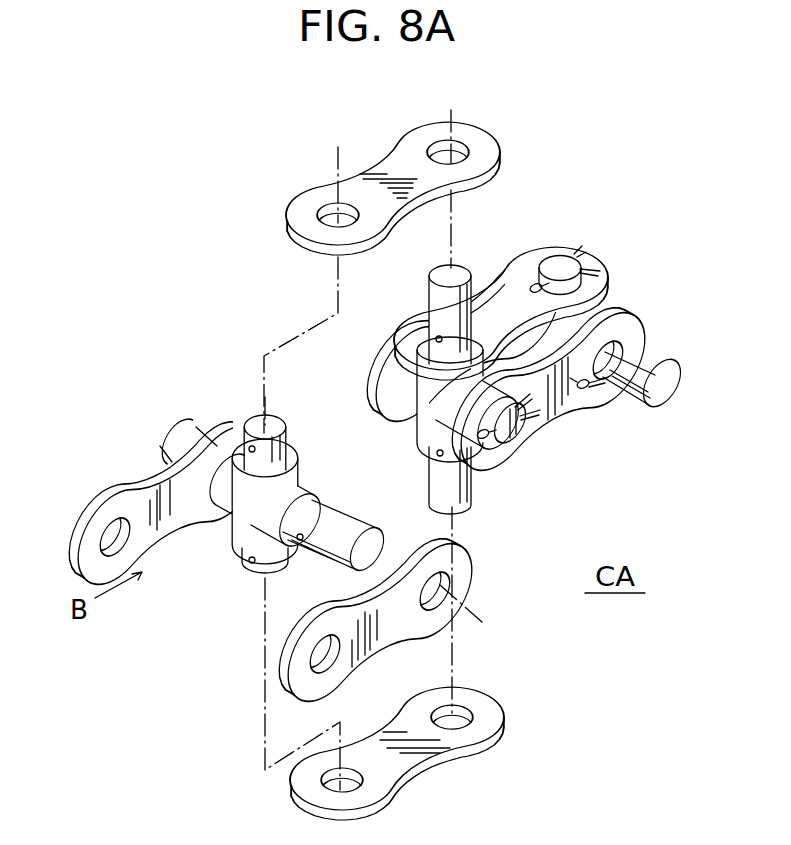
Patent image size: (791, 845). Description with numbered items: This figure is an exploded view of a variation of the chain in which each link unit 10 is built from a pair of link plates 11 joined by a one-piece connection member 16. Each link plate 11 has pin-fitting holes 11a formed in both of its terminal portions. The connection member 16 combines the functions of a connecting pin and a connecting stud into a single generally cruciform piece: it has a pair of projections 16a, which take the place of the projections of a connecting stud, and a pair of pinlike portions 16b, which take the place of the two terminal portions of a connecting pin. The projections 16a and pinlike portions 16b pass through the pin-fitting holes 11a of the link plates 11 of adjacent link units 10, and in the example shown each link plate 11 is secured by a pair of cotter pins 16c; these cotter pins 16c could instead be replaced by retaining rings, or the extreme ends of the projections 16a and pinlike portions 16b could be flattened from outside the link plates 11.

The link unit 10 is at (310, 190).
The link plate 11 is at (397, 170).
The pin-fitting hole 11a is at (457, 153).
The connection member 16 is at (242, 530).
The projection 16a is at (265, 432).
The pinlike portion 16b is at (440, 303).
The cotter pin 16c is at (578, 255).